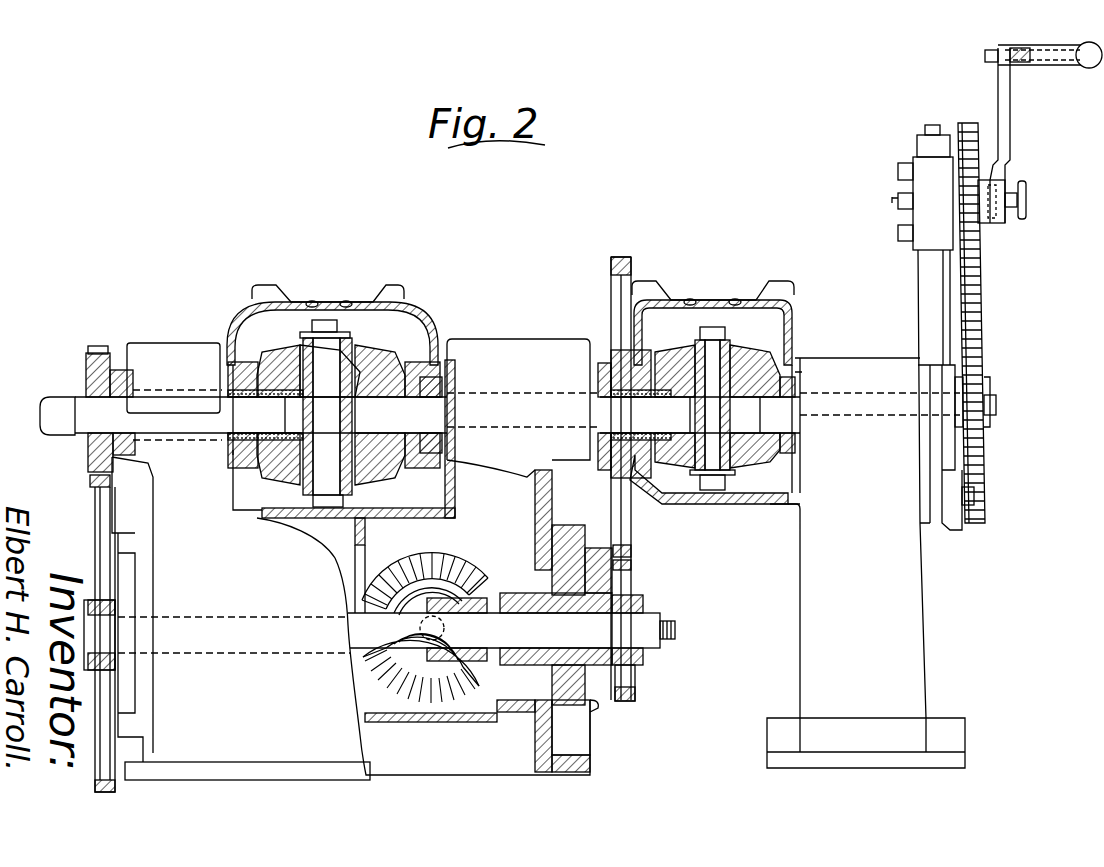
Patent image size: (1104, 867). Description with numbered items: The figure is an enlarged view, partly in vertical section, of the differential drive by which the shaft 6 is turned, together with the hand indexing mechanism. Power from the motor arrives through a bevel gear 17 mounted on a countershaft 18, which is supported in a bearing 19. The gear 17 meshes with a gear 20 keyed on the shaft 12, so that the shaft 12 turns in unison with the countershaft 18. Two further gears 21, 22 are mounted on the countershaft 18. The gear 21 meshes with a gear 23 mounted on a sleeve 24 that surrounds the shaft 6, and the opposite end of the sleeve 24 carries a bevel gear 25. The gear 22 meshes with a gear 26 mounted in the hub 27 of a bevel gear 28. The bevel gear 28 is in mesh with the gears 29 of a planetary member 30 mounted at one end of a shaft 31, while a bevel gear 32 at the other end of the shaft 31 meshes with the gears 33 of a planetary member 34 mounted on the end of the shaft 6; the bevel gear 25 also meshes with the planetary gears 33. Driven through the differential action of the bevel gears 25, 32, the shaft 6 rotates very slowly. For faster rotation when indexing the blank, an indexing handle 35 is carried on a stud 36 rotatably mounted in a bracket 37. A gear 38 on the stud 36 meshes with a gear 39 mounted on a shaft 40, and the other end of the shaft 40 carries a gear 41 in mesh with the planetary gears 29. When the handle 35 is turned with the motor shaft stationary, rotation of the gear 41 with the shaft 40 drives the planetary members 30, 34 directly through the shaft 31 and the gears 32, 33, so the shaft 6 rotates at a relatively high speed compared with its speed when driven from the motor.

The shaft 6 is at (57, 426).
The shaft 12 is at (386, 692).
The bevel gear 17 is at (476, 570).
The countershaft 18 is at (238, 650).
The bearing 19 is at (592, 705).
The gear 20 is at (437, 562).
The gear 21 is at (115, 522).
The gear 22 is at (636, 676).
The gear 23 is at (100, 353).
The sleeve 24 is at (85, 405).
The bevel gear 25 is at (256, 362).
The gear 26 is at (633, 545).
The hub 27 is at (605, 455).
The bevel gear 28 is at (648, 352).
The planetary gears 29 is at (755, 335).
The planetary member 30 is at (690, 418).
The shaft 31 is at (505, 395).
The bevel gear 32 is at (395, 360).
The planetary gears 33 is at (370, 345).
The planetary member 34 is at (327, 390).
The indexing handle 35 is at (1006, 90).
The stud 36 is at (896, 203).
The bracket 37 is at (917, 268).
The gear 38 is at (975, 250).
The gear 39 is at (984, 325).
The shaft 40 is at (858, 412).
The gear 41 is at (797, 373).